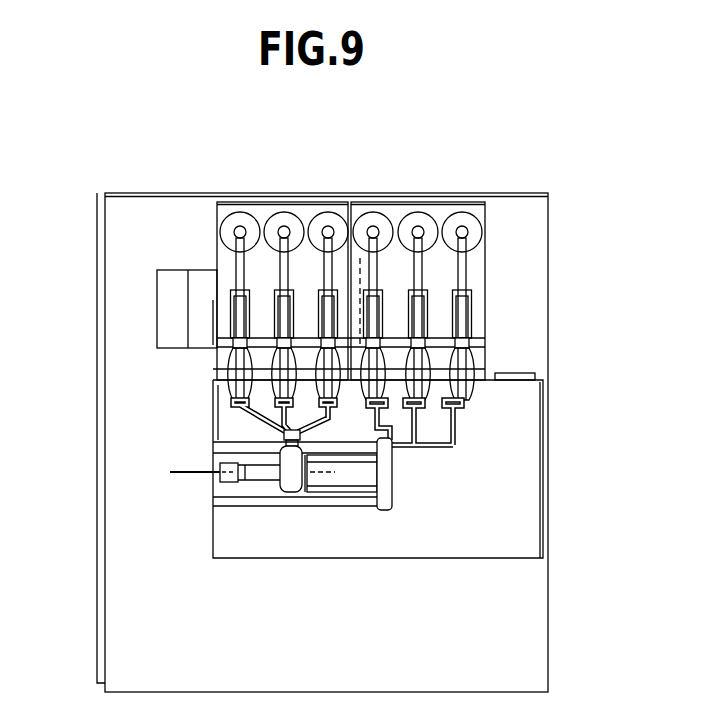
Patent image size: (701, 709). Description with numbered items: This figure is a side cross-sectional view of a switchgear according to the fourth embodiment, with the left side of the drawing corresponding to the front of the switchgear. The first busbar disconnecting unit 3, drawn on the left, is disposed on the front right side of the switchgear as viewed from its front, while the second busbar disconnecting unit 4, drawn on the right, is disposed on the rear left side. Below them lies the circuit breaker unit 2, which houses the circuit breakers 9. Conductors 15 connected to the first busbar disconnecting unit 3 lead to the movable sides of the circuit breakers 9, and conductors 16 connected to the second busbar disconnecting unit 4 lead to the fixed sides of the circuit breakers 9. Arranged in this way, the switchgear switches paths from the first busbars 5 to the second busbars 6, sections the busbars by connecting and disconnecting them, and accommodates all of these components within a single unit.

The circuit breaker unit 2 is at (553, 412).
The first busbar disconnecting unit 3 is at (228, 195).
The second busbar disconnecting unit 4 is at (386, 192).
The first busbars 5 is at (297, 198).
The second busbars 6 is at (427, 200).
The circuit breakers 9 is at (345, 458).
The conductors 15 is at (245, 415).
The conductors 16 is at (455, 445).